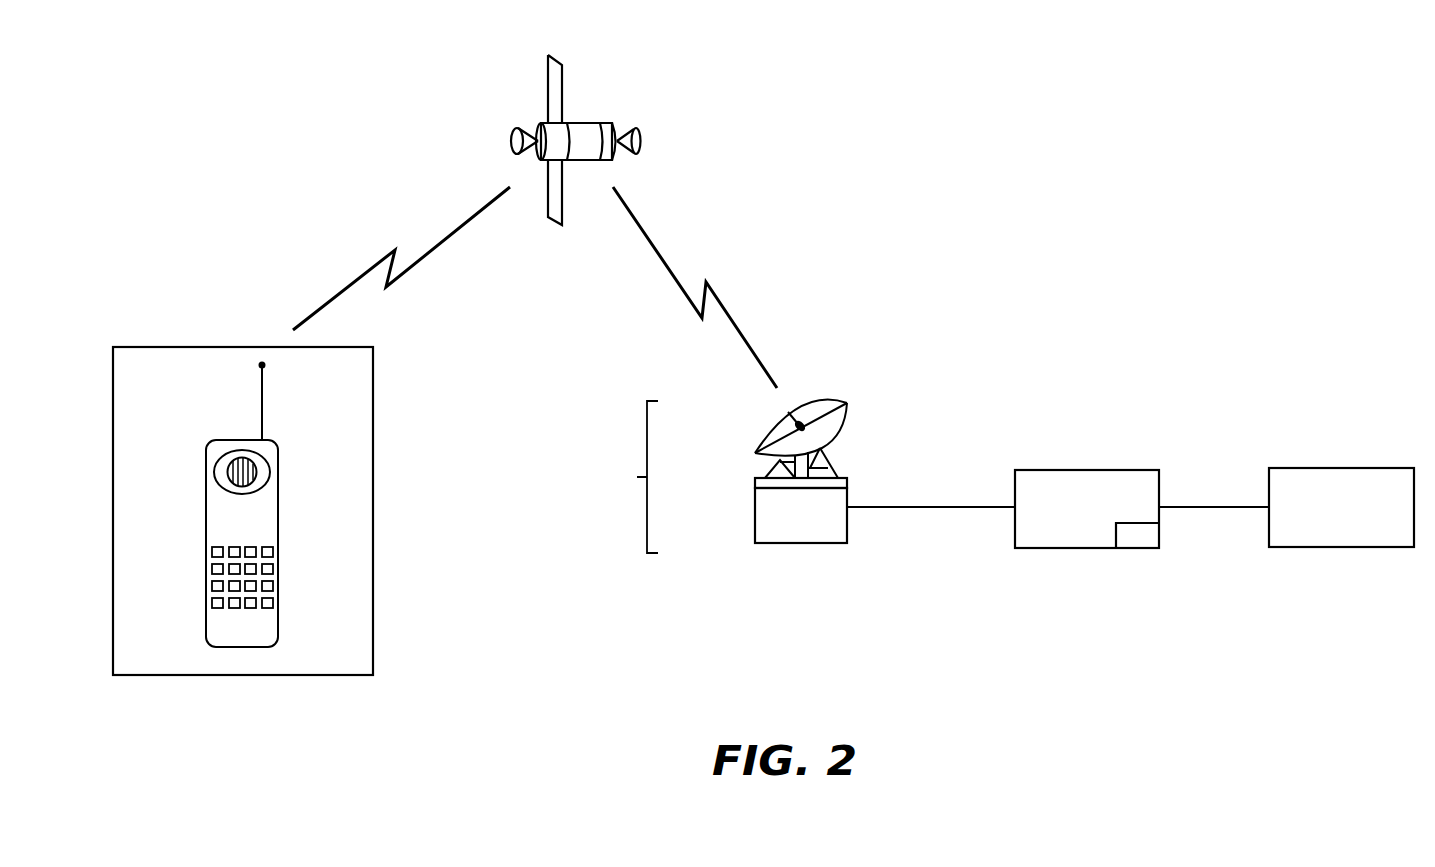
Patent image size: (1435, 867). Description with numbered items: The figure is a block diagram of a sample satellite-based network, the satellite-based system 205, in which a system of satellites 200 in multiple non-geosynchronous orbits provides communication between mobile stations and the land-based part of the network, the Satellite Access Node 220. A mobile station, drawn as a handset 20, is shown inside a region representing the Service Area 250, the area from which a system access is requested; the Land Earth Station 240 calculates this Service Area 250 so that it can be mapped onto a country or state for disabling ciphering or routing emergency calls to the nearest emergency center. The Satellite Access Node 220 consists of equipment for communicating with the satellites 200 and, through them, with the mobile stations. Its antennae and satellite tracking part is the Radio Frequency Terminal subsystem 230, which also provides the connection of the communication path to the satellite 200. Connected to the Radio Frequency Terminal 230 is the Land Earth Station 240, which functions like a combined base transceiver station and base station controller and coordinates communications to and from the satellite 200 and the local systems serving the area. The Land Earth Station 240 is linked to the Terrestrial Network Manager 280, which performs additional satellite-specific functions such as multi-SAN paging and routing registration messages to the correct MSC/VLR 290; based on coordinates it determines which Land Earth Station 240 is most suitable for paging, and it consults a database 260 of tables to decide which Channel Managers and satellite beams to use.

The mobile terminal 20 is at (205, 550).
The satellites 200 is at (584, 122).
The satellite-based system 205 is at (1218, 190).
The Satellite Access Node (SAN) 220 is at (623, 477).
The Radio Frequency Terminal (RFT) subsystem 230 is at (757, 458).
The Land Earth Station (LES) 240 is at (755, 520).
The Service Area 250 is at (355, 653).
The database 260 is at (1140, 540).
The Terrestrial Network Manager (TNM) 280 is at (1085, 470).
The MSC/VLR 290 is at (1340, 468).